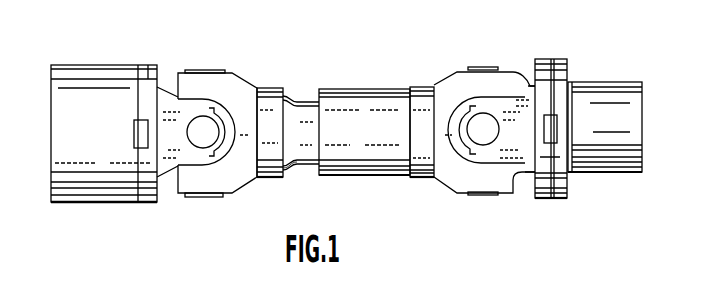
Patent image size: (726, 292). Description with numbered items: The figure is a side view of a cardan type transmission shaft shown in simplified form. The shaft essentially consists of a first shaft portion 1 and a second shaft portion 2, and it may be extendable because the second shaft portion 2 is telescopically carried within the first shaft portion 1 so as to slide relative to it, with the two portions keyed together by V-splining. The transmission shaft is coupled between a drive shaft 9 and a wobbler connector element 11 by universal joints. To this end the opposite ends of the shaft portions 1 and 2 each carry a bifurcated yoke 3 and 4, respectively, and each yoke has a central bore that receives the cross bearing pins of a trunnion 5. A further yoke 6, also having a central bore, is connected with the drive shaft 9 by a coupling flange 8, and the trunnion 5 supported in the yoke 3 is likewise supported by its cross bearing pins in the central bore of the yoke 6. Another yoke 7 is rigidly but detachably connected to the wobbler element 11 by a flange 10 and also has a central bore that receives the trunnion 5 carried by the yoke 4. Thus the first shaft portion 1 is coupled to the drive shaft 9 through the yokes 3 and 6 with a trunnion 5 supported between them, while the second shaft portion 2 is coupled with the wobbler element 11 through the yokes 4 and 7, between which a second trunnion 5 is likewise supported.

The first shaft portion 1 is at (363, 110).
The second shaft portion 2 is at (300, 107).
The bifurcated yoke 3 is at (450, 90).
The bifurcated yoke 4 is at (230, 77).
The trunnion 5 is at (207, 125).
The yoke 6 is at (522, 100).
The yoke 7 is at (182, 112).
The flange 8 is at (558, 80).
The drive shaft 9 is at (612, 97).
The flange 10 is at (150, 67).
The wobbler connector element 11 is at (73, 92).